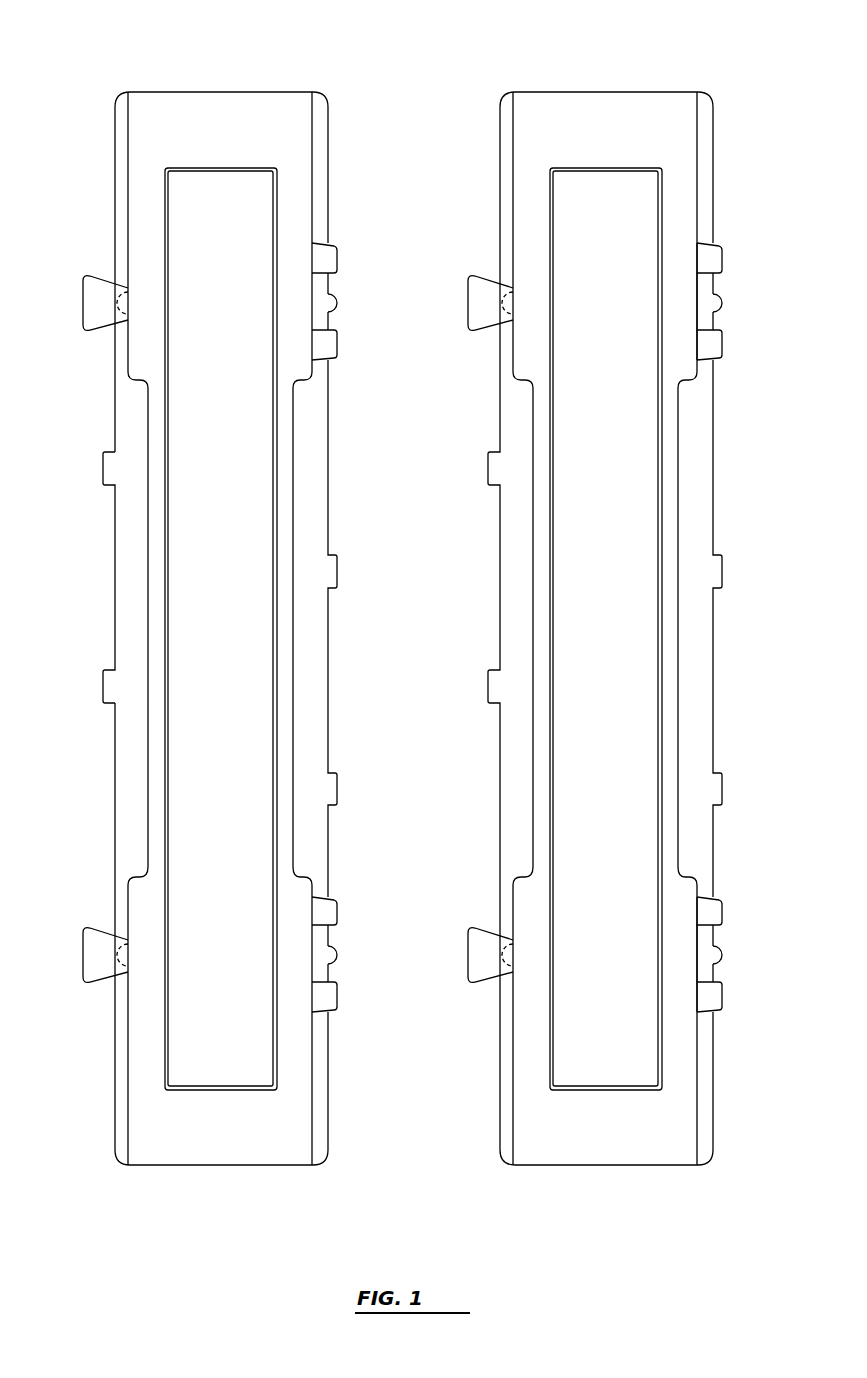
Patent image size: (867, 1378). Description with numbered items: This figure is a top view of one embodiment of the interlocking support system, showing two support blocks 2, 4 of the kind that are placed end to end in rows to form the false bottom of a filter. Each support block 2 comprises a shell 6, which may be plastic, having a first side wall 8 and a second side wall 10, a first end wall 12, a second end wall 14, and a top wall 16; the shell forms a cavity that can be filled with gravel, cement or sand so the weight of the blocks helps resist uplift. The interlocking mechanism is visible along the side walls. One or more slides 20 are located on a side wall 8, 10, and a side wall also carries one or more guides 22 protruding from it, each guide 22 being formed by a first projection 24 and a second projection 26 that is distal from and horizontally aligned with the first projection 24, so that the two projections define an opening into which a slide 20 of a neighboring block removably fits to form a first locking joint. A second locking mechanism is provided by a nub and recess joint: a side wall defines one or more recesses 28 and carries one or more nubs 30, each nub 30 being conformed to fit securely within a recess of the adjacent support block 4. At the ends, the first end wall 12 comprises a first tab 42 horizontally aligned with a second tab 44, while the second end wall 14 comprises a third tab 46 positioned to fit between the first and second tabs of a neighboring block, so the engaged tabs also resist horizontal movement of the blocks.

The support block 2 is at (228, 623).
The support block 4 is at (672, 69).
The shell 6 is at (293, 122).
The first side wall 8 is at (137, 572).
The second side wall 10 is at (308, 572).
The first end wall 12 is at (127, 87).
The second end wall 14 is at (302, 1170).
The top wall 16 is at (152, 1117).
The slide 20 is at (87, 271).
The guide 22 is at (348, 287).
The first projection 24 is at (340, 351).
The second projection 26 is at (339, 258).
The recess 28 is at (113, 303).
The nub 30 is at (341, 303).
The first tab 42 is at (195, 87).
The second tab 44 is at (248, 87).
The third tab 46 is at (223, 1170).